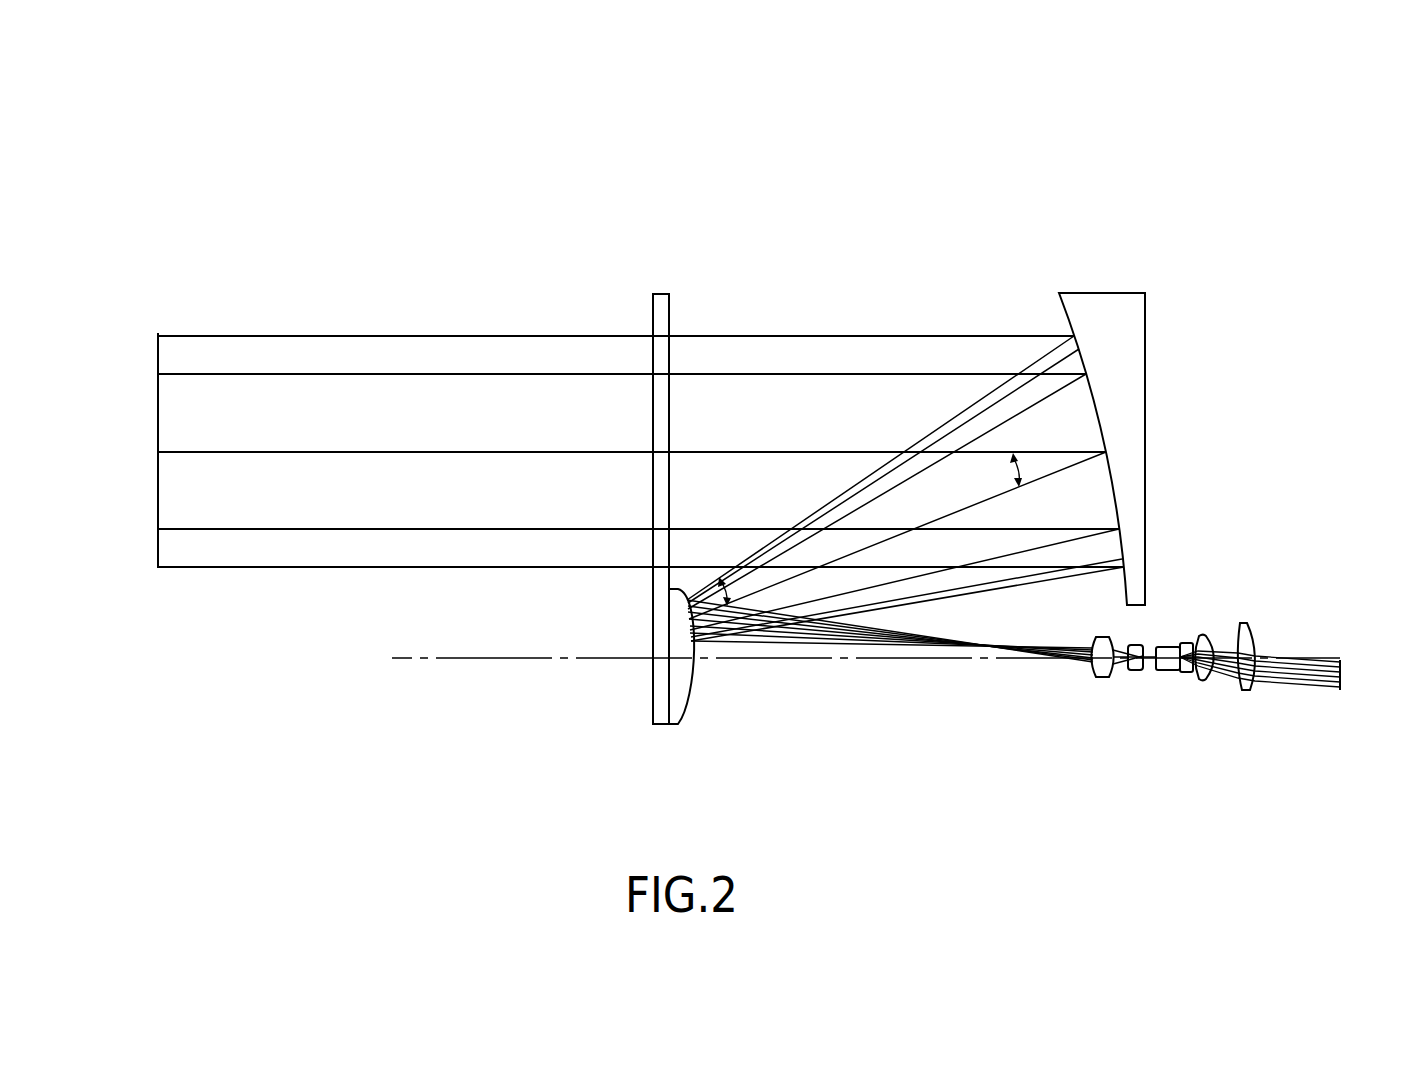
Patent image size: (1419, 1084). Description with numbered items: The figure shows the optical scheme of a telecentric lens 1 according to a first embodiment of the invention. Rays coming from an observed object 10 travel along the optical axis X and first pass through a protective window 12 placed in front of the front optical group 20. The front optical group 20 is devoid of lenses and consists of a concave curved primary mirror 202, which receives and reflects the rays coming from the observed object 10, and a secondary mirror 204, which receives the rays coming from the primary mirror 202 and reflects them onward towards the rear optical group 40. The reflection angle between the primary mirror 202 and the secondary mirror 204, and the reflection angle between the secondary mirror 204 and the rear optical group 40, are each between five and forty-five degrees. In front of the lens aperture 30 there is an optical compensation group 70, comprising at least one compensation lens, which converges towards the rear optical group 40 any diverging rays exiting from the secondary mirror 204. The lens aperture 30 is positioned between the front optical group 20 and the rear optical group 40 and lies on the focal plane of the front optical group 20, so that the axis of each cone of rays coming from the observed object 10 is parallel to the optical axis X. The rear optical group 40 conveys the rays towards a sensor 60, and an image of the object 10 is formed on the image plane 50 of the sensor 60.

The telecentric lens 1 is at (390, 190).
The observed object 10 is at (157, 407).
The protective window 12 is at (654, 578).
The front optical group 20 is at (1160, 242).
The concave curved primary mirror 202 is at (1098, 408).
The secondary mirror 204 is at (692, 660).
The lens aperture 30 is at (1147, 655).
The rear optical group 40 is at (1263, 713).
The image plane 50 is at (1342, 674).
The sensor 60 is at (1341, 648).
The optical compensation group 70 is at (1121, 690).
The optical axis X is at (396, 659).